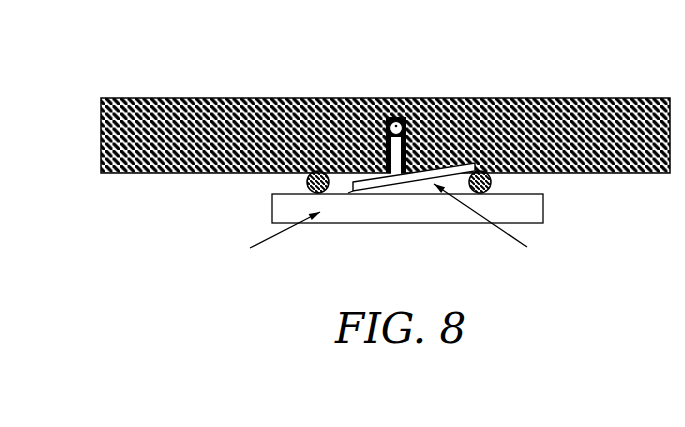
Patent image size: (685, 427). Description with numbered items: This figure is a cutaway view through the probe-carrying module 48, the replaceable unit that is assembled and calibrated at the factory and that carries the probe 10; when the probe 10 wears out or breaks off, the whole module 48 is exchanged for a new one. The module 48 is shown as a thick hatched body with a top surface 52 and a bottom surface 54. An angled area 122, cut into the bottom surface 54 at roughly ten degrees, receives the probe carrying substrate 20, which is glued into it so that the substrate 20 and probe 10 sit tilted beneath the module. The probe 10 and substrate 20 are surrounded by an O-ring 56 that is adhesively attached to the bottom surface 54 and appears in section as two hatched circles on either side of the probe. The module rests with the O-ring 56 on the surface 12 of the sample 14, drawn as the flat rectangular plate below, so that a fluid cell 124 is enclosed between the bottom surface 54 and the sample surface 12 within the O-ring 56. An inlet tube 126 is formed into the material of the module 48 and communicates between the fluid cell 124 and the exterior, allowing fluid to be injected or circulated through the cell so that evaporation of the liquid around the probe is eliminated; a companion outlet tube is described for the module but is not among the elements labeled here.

The probe 10 is at (351, 194).
The sample surface 12 is at (285, 192).
The sample 14 is at (460, 213).
The probe carrying substrate 20 is at (407, 182).
The probe-carrying module 48 is at (385, 155).
The top surface 52 is at (252, 98).
The bottom surface 54 is at (650, 173).
The O-ring 56 is at (492, 180).
The angled area 122 is at (433, 165).
The fluid cell 124 is at (340, 182).
The inlet tube 126 is at (401, 121).